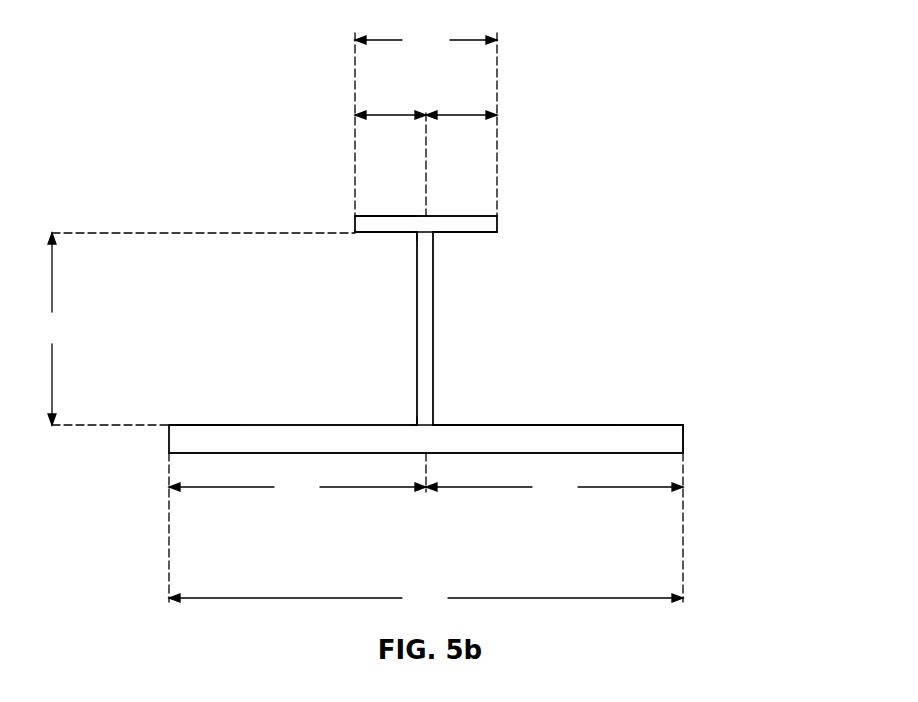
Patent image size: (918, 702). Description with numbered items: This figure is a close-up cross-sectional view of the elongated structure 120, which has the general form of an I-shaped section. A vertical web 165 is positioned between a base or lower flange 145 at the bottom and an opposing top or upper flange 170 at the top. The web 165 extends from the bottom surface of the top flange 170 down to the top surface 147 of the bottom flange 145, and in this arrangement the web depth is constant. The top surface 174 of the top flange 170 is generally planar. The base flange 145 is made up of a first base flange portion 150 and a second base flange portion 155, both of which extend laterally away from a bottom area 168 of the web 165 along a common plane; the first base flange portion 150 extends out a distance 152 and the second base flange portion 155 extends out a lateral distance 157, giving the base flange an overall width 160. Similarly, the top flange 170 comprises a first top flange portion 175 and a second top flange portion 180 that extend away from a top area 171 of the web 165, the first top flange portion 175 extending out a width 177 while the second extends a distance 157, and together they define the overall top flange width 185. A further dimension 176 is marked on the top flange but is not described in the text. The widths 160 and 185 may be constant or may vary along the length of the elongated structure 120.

The elongated structure 120 is at (711, 162).
The base flange 145 is at (640, 369).
The web 165 is at (435, 317).
The top flange 170 is at (427, 215).
The top surface of the top flange 174 is at (395, 215).
The first top flange portion 175 is at (375, 233).
The second top flange portion 180 is at (487, 234).
The top area of the web 171 is at (416, 236).
The bottom area of the web 168 is at (416, 423).
The first base flange portion 150 is at (203, 424).
The top surface of the bottom flange 147 is at (538, 424).
The second base flange portion 155 is at (656, 424).
The overall width of the top flange 185 is at (426, 122).
The top flange left half width 176 is at (393, 112).
The lateral distance W_SBF 157 is at (465, 112).
The distance W_FBF 152 is at (297, 527).
The overall width of the base flange 160 is at (426, 532).
The width W_FTF of the first top flange portion 177 is at (194, 329).